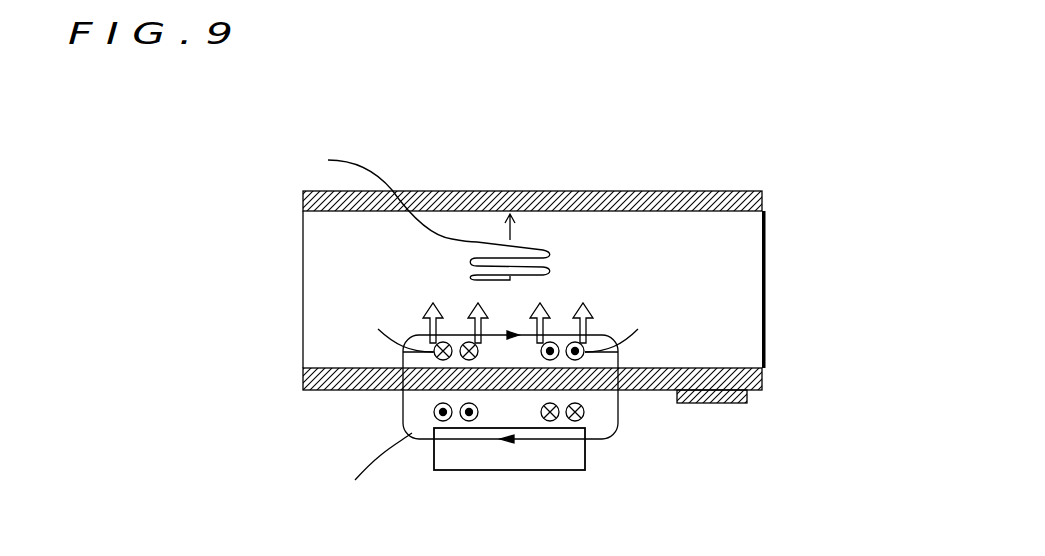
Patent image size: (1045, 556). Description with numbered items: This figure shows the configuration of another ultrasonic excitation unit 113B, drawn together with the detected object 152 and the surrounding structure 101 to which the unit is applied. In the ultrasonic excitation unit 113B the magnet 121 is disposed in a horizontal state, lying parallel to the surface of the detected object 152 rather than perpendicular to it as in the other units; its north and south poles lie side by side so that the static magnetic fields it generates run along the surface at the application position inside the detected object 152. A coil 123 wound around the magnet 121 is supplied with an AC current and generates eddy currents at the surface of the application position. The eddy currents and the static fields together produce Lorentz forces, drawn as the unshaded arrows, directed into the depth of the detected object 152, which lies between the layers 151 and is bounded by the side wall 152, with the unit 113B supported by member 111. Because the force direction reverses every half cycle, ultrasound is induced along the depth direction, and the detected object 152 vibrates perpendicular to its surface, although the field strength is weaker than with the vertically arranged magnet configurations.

The ultrasonic sensor device 101 is at (565, 113).
The acoustic matching layer / plate 151 is at (765, 203).
The detected object 152 is at (767, 295).
The support member 111 is at (720, 404).
The ultrasonic excitation unit 113B is at (416, 498).
The coil 123 is at (434, 413).
The magnet 121 is at (506, 472).